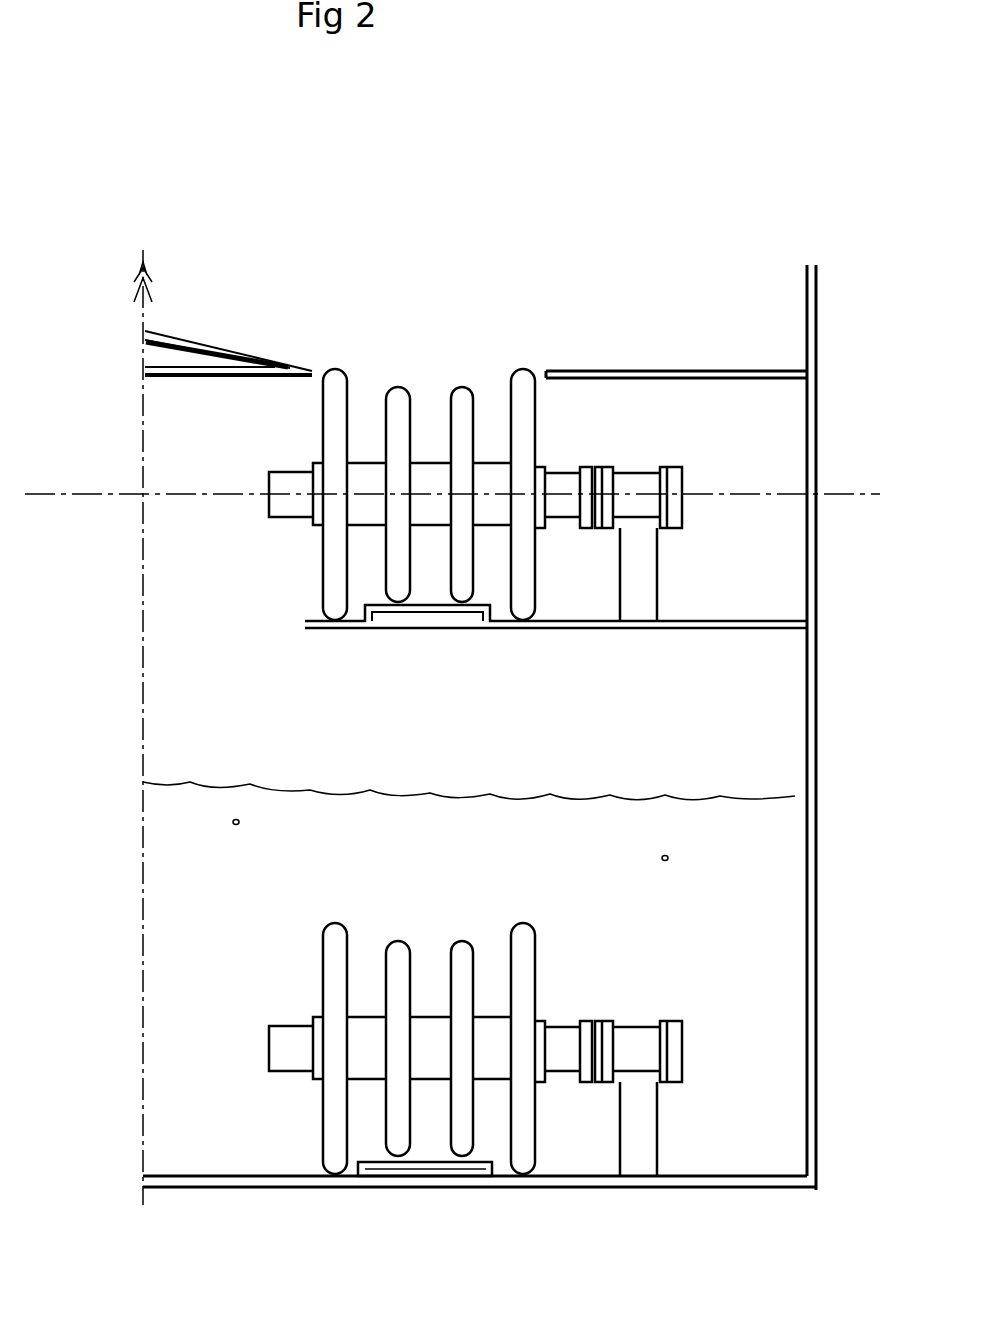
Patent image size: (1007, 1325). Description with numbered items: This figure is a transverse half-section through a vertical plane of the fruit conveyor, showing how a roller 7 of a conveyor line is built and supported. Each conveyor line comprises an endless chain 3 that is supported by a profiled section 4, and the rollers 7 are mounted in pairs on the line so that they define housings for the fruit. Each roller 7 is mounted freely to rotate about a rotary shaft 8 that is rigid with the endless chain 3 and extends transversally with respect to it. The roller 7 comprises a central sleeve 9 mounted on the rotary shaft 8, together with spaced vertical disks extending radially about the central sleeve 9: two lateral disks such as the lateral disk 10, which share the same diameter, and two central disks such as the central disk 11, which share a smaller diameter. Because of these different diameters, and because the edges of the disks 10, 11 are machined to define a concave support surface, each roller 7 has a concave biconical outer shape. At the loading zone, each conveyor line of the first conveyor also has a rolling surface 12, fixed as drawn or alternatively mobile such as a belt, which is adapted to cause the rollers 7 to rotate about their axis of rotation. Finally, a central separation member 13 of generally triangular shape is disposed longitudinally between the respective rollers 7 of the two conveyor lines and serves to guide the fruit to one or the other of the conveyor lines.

The endless chain 3 is at (633, 478).
The profiled section 4 is at (633, 602).
The roller 7 is at (475, 715).
The rotary shaft 8 is at (559, 481).
The central sleeve 9 is at (364, 510).
The lateral disk 10 is at (533, 647).
The central disk 11 is at (397, 392).
The rolling surface 12 is at (484, 625).
The central separation member 13 is at (190, 346).